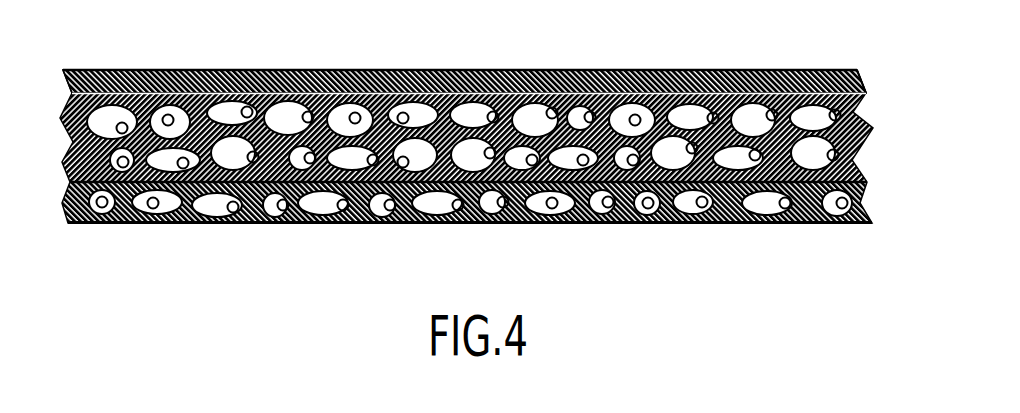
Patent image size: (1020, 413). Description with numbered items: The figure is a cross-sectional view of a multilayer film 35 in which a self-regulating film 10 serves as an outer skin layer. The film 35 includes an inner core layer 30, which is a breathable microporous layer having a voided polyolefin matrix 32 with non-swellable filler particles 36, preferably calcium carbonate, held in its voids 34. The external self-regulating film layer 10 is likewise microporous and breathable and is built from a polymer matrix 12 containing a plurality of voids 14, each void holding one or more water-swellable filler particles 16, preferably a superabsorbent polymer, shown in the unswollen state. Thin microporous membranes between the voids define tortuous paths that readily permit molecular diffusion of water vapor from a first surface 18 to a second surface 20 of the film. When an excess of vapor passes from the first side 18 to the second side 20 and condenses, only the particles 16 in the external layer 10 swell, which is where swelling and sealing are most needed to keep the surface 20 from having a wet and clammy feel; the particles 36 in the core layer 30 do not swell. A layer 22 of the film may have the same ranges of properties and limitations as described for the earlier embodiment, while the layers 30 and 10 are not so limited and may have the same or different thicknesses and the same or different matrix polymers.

The self-regulating film layer 10 is at (870, 215).
The polymer matrix 12 is at (733, 223).
The voids 14 is at (527, 210).
The water-swellable filler particles 16 is at (552, 209).
The first surface 18 is at (168, 70).
The second surface 20 is at (255, 223).
The layer 22 is at (787, 72).
The inner core layer 30 is at (872, 152).
The voided polyolefin matrix 32 is at (712, 74).
The voids 34 is at (619, 107).
The multilayer film 35 is at (865, 78).
The non-swellable filler particles 36 is at (635, 114).